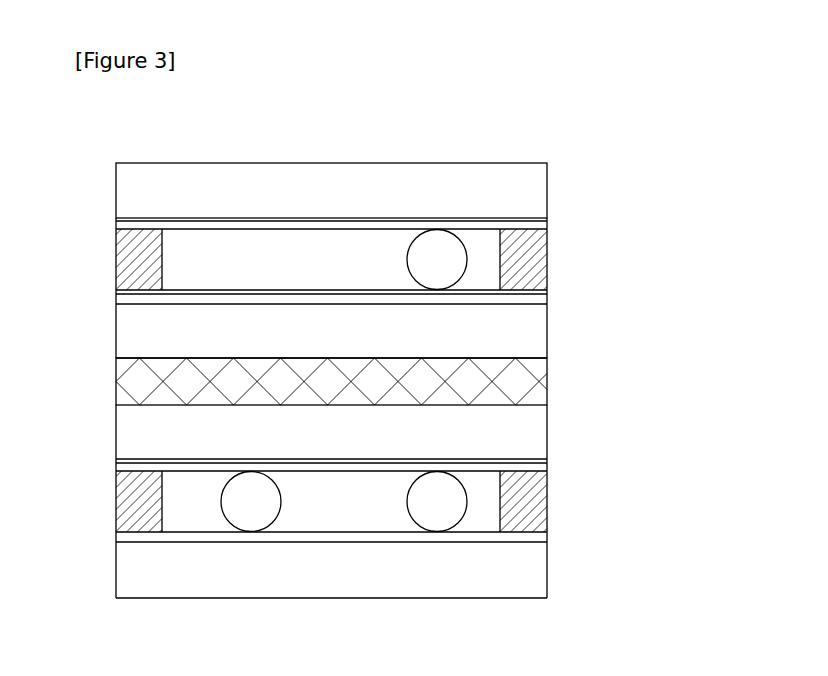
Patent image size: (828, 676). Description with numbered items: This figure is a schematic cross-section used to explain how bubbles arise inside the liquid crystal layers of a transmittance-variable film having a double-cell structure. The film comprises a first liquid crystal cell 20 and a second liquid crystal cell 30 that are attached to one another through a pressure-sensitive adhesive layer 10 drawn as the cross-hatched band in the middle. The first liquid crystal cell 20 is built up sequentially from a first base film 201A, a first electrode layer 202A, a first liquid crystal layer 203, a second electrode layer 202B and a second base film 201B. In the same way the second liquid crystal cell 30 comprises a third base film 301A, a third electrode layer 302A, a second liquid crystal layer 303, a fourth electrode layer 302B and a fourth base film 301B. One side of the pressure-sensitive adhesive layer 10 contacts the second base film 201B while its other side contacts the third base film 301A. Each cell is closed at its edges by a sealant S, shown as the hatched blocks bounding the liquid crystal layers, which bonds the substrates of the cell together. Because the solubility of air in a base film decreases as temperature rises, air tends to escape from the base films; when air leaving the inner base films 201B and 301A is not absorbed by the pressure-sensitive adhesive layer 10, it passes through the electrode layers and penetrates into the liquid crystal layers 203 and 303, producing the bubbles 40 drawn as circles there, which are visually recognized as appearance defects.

The pressure-sensitive adhesive layer 10 is at (549, 379).
The first liquid crystal cell 20 is at (392, 260).
The second liquid crystal cell 30 is at (392, 501).
The bubbles 40 is at (441, 253).
The first base film 201A is at (549, 193).
The first electrode layer 202A is at (549, 225).
The first liquid crystal layer 203 is at (482, 253).
The second electrode layer 202B is at (549, 297).
The second base film 201B is at (370, 331).
The third base film 301A is at (549, 436).
The third electrode layer 302A is at (549, 466).
The second liquid crystal layer 303 is at (478, 494).
The fourth electrode layer 302B is at (549, 539).
The fourth base film 301B is at (370, 570).
The sealant S is at (128, 258).